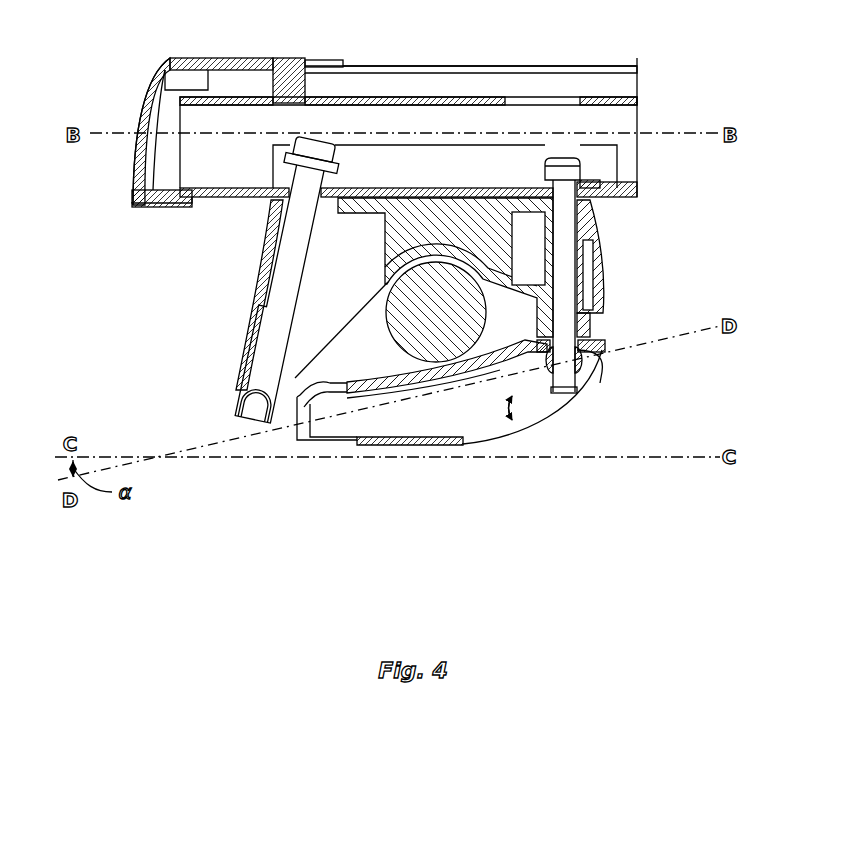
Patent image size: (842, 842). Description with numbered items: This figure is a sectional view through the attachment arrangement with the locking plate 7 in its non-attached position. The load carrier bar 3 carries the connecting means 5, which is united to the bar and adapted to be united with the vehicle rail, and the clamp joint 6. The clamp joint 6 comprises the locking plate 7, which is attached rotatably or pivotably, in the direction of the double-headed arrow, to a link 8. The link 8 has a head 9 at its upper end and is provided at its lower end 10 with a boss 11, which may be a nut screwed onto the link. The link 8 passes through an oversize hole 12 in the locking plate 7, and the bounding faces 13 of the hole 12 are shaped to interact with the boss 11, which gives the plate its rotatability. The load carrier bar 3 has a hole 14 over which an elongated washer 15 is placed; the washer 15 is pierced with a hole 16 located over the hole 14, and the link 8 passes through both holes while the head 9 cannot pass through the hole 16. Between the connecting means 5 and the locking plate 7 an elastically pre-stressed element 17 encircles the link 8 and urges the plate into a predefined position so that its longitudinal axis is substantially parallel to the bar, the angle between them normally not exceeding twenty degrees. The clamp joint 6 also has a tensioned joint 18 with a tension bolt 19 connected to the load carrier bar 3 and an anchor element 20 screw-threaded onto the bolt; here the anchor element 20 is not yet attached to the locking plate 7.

The load carrier bar 3 is at (397, 68).
The connecting means 5 is at (272, 258).
The clamp joint 6 is at (478, 420).
The locking plate 7 is at (466, 427).
The link 8 is at (608, 286).
The head 9 is at (558, 165).
The lower end 10 is at (565, 388).
The boss 11 is at (582, 372).
The oversize hole 12 is at (590, 343).
The bounding faces 13 is at (587, 363).
The hole 14 is at (527, 197).
The elongated washer 15 is at (395, 158).
The hole 16 is at (583, 180).
The elastically pre-stressed element 17 is at (594, 315).
The tensioned joint 18 is at (206, 298).
The tension bolt 19 is at (264, 287).
The anchor element 20 is at (242, 393).